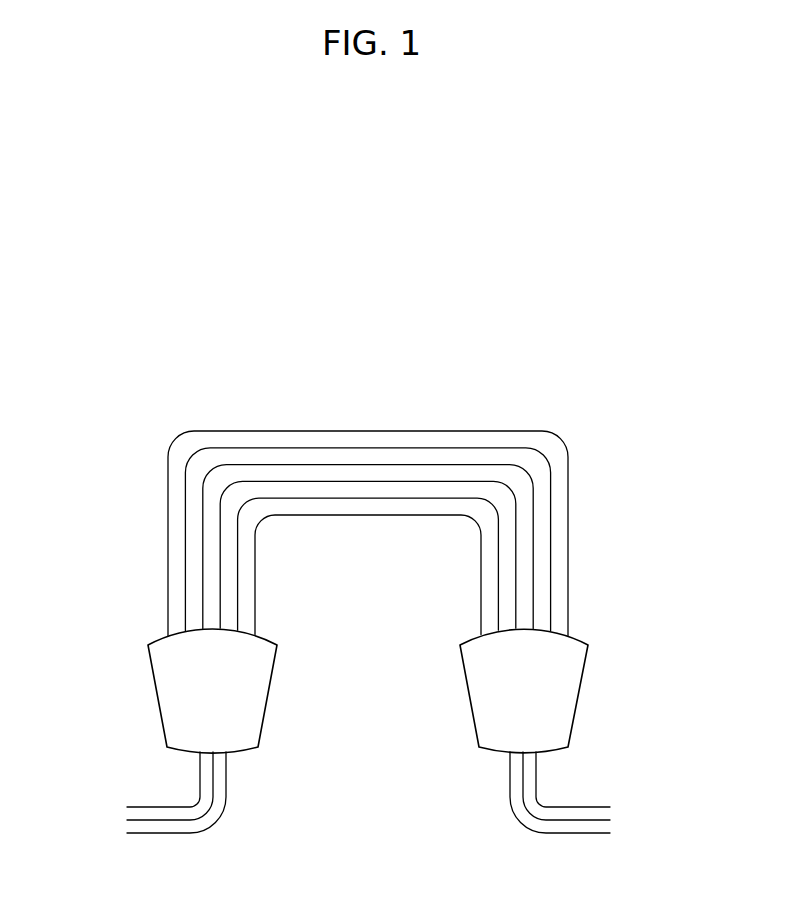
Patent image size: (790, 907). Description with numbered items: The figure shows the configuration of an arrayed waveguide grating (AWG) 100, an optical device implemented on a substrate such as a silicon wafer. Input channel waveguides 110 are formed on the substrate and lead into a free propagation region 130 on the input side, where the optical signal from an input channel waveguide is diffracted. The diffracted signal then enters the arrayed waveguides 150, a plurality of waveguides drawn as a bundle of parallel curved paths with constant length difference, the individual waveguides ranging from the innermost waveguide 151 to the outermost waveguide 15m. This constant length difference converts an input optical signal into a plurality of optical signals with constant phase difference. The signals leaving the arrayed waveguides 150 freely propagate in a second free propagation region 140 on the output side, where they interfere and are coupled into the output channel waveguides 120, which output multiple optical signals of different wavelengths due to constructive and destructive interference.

The arrayed waveguide grating 100 is at (586, 365).
The input channel waveguides 110 is at (168, 801).
The output channel waveguides 120 is at (572, 800).
The free propagation region 130 is at (170, 683).
The free propagation region 140 is at (567, 680).
The arrayed waveguides 150 is at (333, 516).
The waveguide 15m is at (489, 431).
The waveguide 151 is at (415, 517).